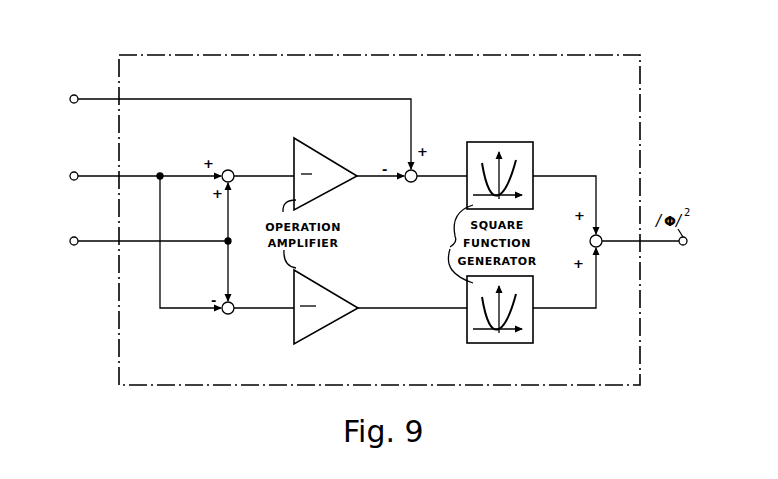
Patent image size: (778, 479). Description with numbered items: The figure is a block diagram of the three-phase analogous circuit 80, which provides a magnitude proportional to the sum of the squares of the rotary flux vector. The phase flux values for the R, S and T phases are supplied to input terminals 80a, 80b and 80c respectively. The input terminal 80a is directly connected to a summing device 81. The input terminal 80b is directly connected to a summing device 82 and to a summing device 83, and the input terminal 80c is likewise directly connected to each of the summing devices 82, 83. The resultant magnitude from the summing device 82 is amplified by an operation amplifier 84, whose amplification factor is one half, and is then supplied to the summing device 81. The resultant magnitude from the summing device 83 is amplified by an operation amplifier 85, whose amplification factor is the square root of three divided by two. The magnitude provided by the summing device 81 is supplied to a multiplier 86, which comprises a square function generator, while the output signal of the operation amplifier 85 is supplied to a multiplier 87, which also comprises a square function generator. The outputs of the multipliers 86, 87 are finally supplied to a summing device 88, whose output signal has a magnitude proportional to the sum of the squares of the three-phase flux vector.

The three-phase analogous circuit 80 is at (362, 43).
The input terminal 80a is at (77, 96).
The input terminal 80b is at (77, 173).
The input terminal 80c is at (77, 238).
The summing device 81 is at (411, 182).
The summing device 82 is at (229, 170).
The summing device 83 is at (228, 314).
The operation amplifier 84 is at (324, 156).
The operation amplifier 85 is at (325, 285).
The multiplier 86 is at (495, 142).
The multiplier 87 is at (500, 343).
The summing device 88 is at (601, 236).